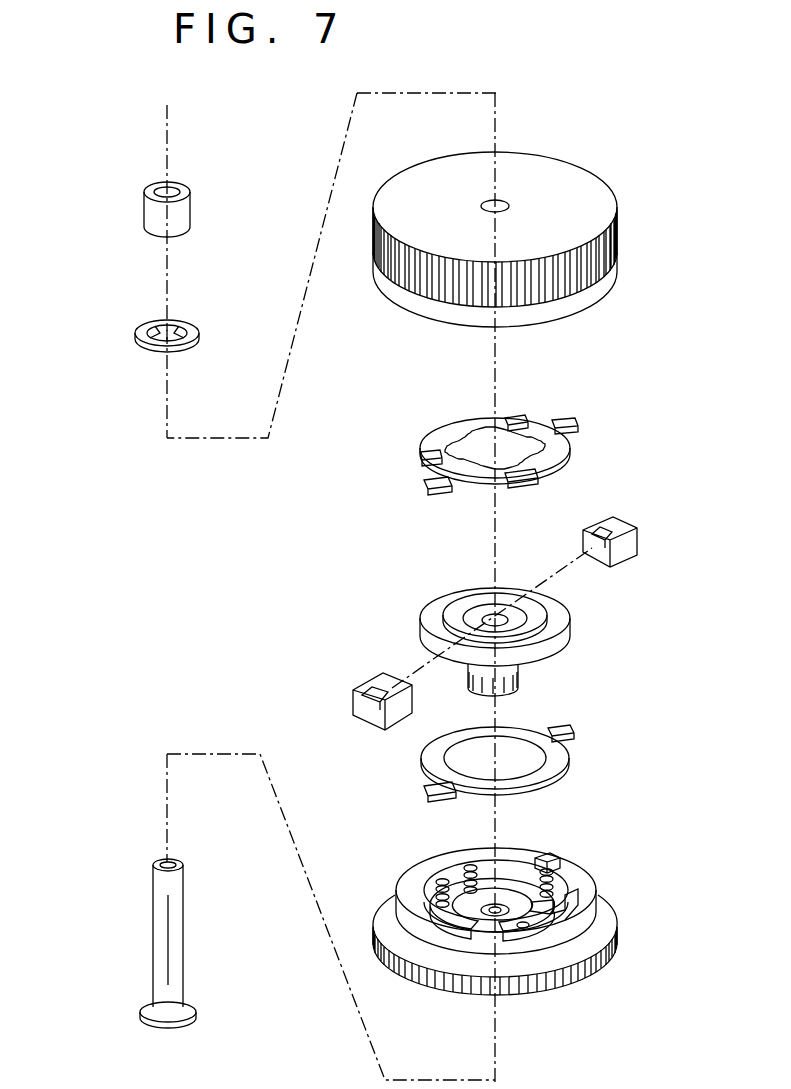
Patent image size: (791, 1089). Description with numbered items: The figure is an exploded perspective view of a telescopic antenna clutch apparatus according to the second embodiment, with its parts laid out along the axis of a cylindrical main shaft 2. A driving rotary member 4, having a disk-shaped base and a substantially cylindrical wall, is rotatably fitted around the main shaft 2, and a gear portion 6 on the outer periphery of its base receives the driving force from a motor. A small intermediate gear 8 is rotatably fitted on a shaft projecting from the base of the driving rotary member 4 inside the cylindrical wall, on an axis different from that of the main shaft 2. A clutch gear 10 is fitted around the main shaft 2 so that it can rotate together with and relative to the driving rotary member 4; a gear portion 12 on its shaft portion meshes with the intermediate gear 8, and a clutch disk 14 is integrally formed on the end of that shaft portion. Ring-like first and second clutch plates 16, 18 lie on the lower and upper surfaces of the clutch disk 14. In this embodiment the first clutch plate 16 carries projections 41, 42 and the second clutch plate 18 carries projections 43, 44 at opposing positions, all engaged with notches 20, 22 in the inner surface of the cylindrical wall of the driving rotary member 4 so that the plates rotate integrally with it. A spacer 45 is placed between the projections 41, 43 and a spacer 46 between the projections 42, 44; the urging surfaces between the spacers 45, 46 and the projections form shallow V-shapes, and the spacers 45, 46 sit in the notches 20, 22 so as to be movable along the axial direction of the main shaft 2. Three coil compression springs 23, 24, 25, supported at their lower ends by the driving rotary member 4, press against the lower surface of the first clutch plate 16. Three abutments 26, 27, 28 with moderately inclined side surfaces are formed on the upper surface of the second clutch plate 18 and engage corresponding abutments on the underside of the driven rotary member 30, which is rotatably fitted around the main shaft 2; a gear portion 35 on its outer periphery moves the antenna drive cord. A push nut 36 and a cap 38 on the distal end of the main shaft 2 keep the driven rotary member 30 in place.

The main shaft 2 is at (153, 915).
The driving rotary member 4 is at (372, 892).
The gear portion 6 is at (450, 975).
The intermediate gear 8 is at (545, 935).
The clutch gear 10 is at (430, 610).
The gear portion 12 is at (517, 676).
The clutch disk 14 is at (560, 613).
The first clutch plate 16 is at (557, 760).
The second clutch plate 18 is at (565, 450).
The notch 20 is at (415, 916).
The notch 22 is at (548, 858).
The coil compression spring 23 is at (466, 887).
The coil compression spring 24 is at (470, 875).
The coil compression spring 25 is at (580, 883).
The abutment 26 is at (425, 455).
The abutment 27 is at (527, 480).
The abutment 28 is at (513, 418).
The driven rotary member 30 is at (522, 157).
The gear portion 35 is at (610, 240).
The push nut 36 is at (137, 333).
The cap 38 is at (143, 203).
The projection 41 is at (425, 791).
The projection 42 is at (555, 728).
The projection 43 is at (432, 490).
The projection 44 is at (560, 420).
The spacer 45 is at (353, 700).
The spacer 46 is at (605, 525).